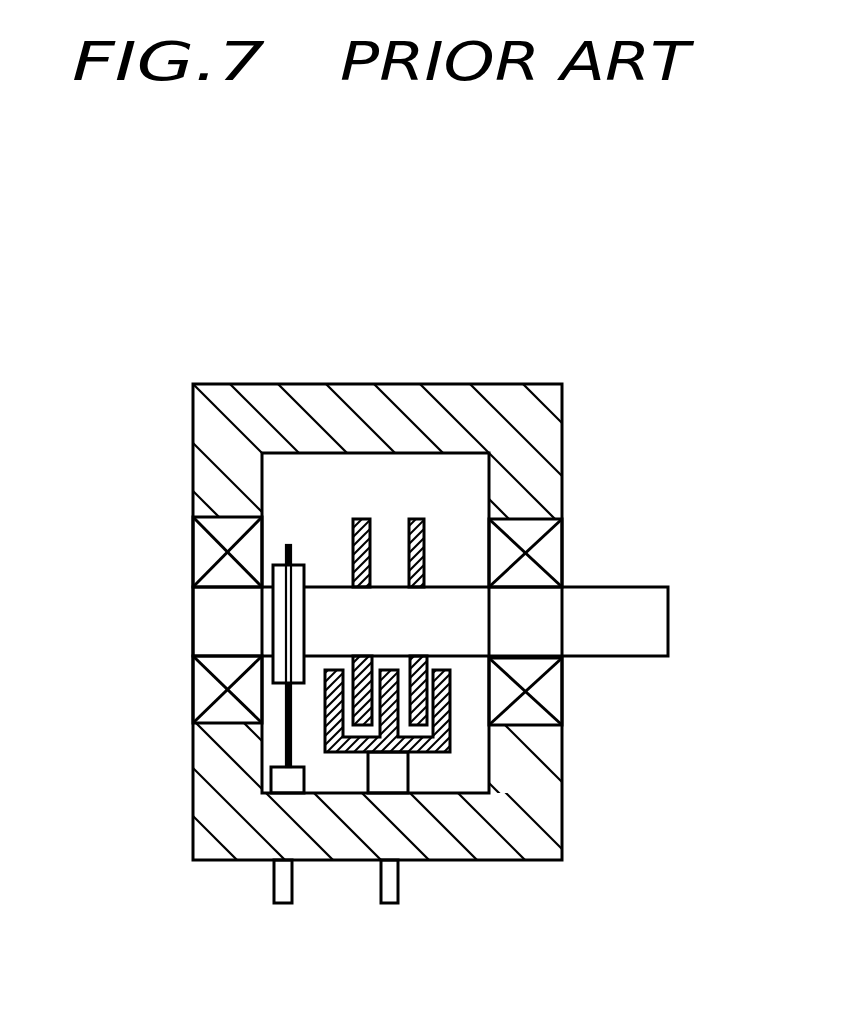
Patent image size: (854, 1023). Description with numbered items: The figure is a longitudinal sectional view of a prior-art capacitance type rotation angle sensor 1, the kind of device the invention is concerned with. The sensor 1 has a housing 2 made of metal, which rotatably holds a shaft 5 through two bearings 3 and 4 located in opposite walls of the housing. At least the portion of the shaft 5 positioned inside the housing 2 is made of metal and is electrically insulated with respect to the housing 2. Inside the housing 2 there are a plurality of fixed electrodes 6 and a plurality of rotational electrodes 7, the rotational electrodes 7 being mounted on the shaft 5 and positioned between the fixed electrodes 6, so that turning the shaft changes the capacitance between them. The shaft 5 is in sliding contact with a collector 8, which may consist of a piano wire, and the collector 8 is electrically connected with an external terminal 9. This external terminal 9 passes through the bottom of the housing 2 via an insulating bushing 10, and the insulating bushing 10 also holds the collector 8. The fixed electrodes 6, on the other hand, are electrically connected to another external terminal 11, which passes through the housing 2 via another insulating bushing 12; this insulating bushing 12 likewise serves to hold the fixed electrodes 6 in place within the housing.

The capacitance type rotation angle sensor 1 is at (163, 385).
The housing 2 is at (520, 862).
The bearing 3 is at (197, 553).
The bearing 4 is at (550, 552).
The shaft 5 is at (614, 610).
The fixed electrodes 6 is at (447, 693).
The rotational electrodes 7 is at (413, 519).
The collector 8 is at (273, 617).
The external terminal 9 is at (270, 885).
The insulating bushing 10 is at (262, 788).
The external terminal 11 is at (378, 885).
The insulating bushing 12 is at (400, 776).